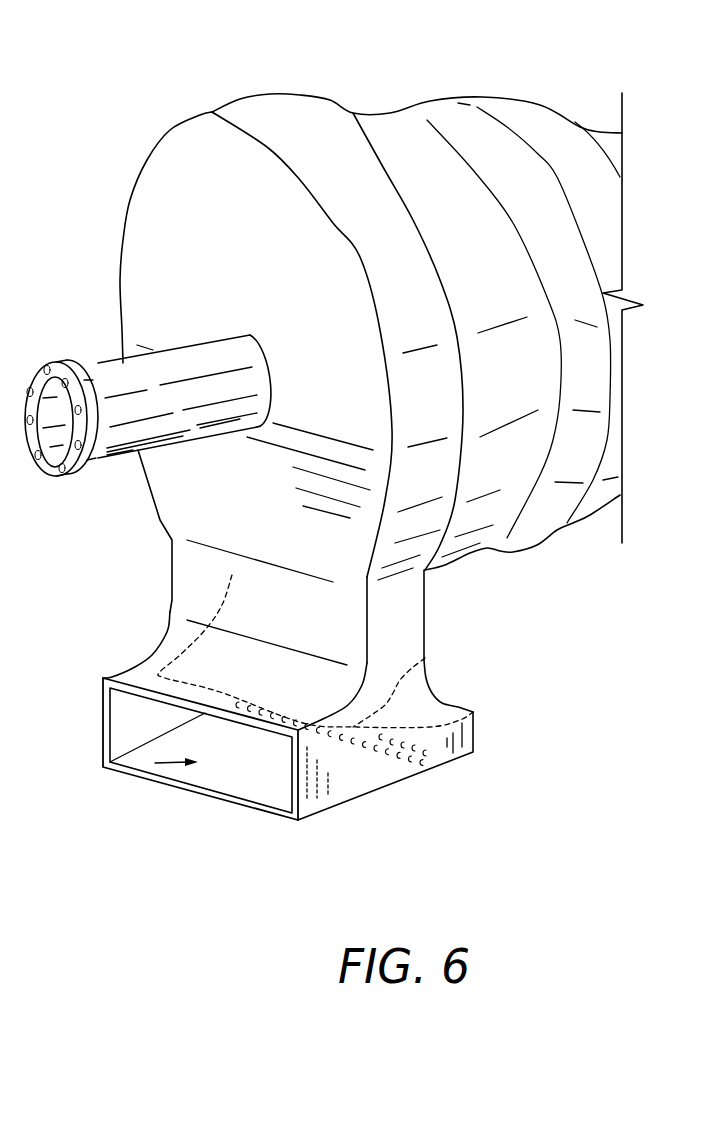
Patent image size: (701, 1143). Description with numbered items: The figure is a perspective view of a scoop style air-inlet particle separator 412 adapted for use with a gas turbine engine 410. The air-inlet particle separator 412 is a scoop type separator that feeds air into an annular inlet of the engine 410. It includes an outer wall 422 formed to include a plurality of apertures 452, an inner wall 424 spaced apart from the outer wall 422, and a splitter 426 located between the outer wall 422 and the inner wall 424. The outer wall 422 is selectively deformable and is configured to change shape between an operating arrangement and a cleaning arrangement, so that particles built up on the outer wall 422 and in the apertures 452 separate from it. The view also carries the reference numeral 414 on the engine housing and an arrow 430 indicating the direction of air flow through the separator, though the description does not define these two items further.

The engine 410 is at (393, 77).
The air-inlet particle separator 412 is at (324, 843).
The motor housing 414 is at (510, 482).
The outer wall 422 is at (385, 787).
The inner wall 424 is at (157, 682).
The splitter 426 is at (425, 658).
The airflow direction 430 is at (158, 765).
The apertures 452 is at (448, 756).